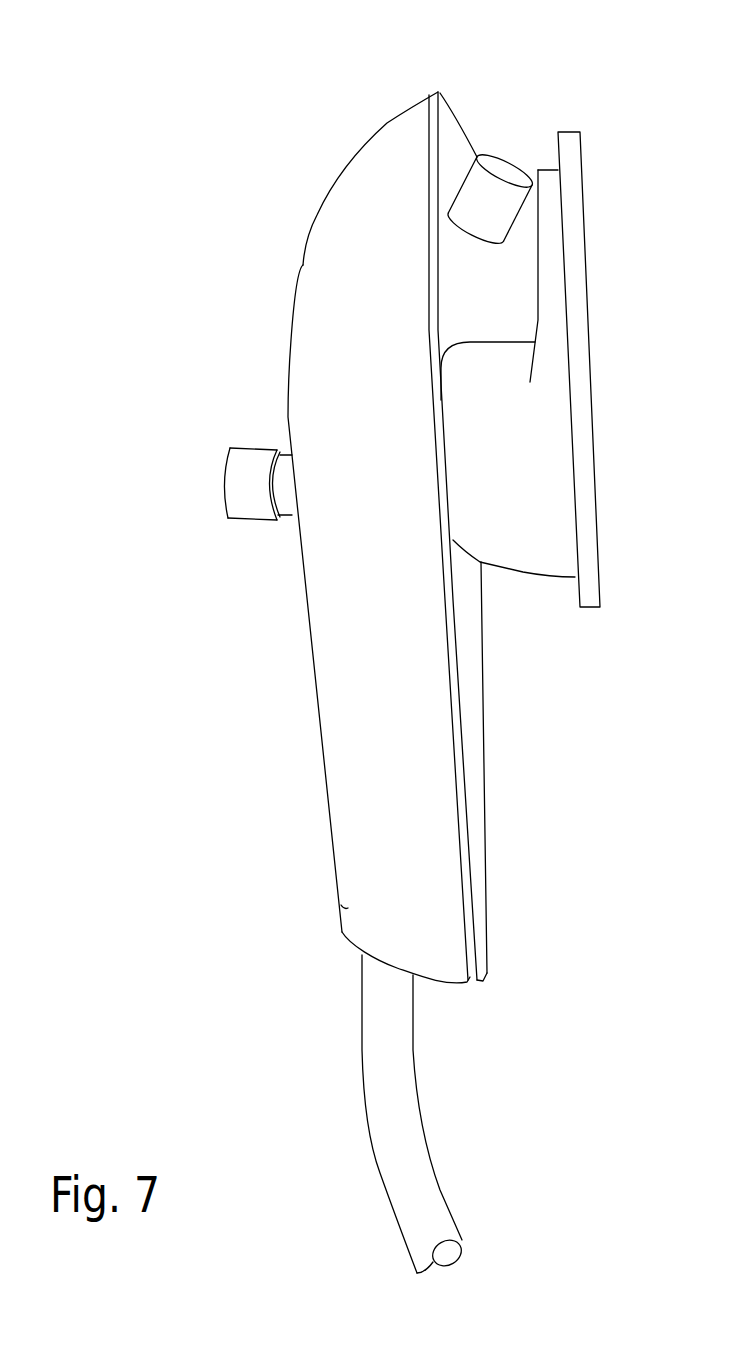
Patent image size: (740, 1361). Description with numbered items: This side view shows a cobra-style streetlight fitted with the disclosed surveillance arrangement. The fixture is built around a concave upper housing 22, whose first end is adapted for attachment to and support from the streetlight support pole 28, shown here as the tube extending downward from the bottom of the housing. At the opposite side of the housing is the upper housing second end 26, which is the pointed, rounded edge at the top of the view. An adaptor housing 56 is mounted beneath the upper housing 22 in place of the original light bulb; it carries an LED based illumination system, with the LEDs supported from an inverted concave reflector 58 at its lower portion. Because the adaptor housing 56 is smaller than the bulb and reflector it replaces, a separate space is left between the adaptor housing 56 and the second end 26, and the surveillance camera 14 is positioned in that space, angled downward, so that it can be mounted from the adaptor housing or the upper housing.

The surveillance camera 14 is at (477, 157).
The concave upper housing 22 is at (382, 504).
The upper housing second end 26 is at (385, 123).
The streetlight support pole 28 is at (427, 1143).
The adaptor housing 56 is at (520, 492).
The inverted concave reflector 58 is at (523, 572).